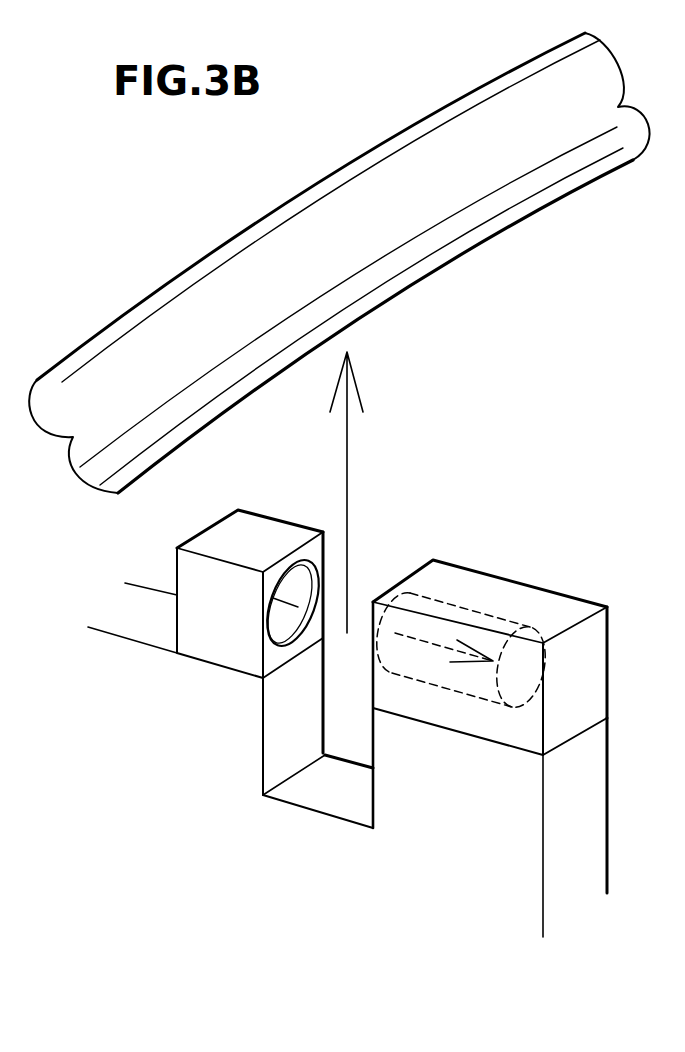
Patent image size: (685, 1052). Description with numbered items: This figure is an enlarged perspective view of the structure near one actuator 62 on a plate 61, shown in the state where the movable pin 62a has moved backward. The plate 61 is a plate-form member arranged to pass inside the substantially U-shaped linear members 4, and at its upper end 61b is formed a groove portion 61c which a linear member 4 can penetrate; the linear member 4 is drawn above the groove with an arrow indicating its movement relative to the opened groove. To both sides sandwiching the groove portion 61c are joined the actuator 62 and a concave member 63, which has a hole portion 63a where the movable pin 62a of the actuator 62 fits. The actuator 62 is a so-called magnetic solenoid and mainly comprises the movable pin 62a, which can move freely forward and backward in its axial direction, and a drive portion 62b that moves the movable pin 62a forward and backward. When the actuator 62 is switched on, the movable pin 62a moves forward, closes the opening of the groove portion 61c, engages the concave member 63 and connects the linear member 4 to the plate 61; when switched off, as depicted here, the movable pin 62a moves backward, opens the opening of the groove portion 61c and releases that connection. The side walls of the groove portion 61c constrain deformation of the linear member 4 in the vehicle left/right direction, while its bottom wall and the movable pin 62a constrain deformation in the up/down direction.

The linear member 4 is at (322, 220).
The plate 61 is at (609, 810).
The upper end 61b is at (137, 607).
The groove portion 61c is at (340, 797).
The actuator 62 is at (565, 525).
The movable pin 62a is at (448, 610).
The drive portion 62b is at (543, 617).
The concave member 63 is at (225, 535).
The hole portion 63a is at (292, 585).